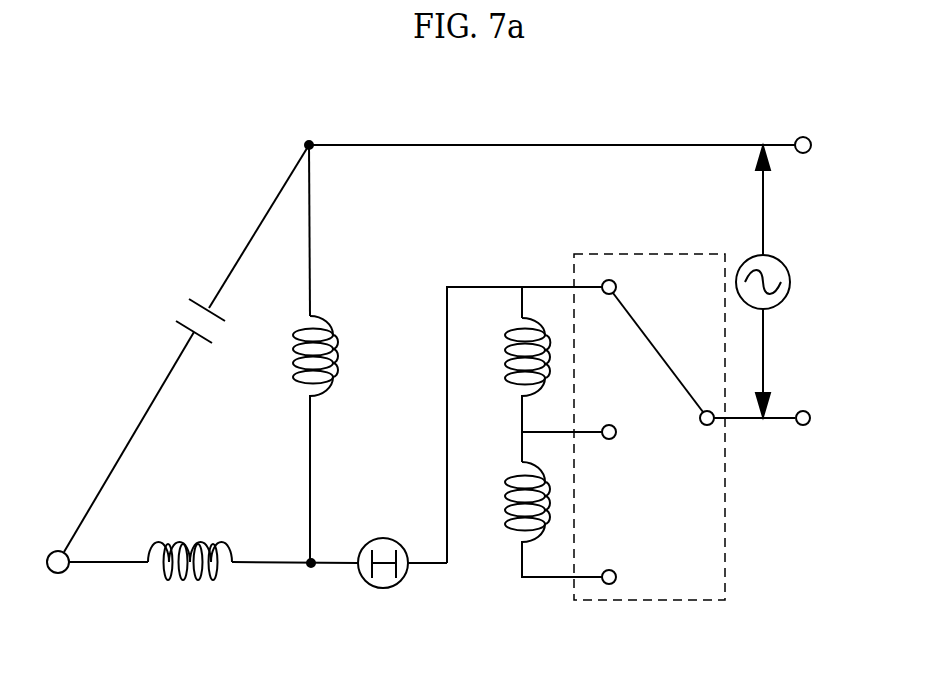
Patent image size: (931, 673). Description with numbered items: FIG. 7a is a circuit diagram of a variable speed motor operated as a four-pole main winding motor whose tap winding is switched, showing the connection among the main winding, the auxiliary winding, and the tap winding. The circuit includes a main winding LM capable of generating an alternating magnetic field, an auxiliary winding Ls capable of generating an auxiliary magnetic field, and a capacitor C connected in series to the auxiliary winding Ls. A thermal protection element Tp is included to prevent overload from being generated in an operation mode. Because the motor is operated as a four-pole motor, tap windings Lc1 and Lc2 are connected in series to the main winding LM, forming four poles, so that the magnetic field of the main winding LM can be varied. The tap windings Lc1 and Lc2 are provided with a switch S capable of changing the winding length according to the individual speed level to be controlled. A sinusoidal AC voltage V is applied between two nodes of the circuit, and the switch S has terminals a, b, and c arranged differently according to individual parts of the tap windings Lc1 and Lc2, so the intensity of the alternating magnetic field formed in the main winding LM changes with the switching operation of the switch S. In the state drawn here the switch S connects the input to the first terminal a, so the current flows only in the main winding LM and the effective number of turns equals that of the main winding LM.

The capacitor C is at (186, 348).
The main winding LM is at (339, 354).
The auxiliary winding Ls is at (190, 583).
The thermal protection element Tp is at (386, 581).
The tap winding Lc1 is at (501, 390).
The tap winding Lc2 is at (527, 519).
The switch S is at (673, 601).
The first terminal a is at (622, 263).
The second terminal b is at (622, 409).
The third terminal c is at (620, 552).
The AC voltage V is at (783, 282).